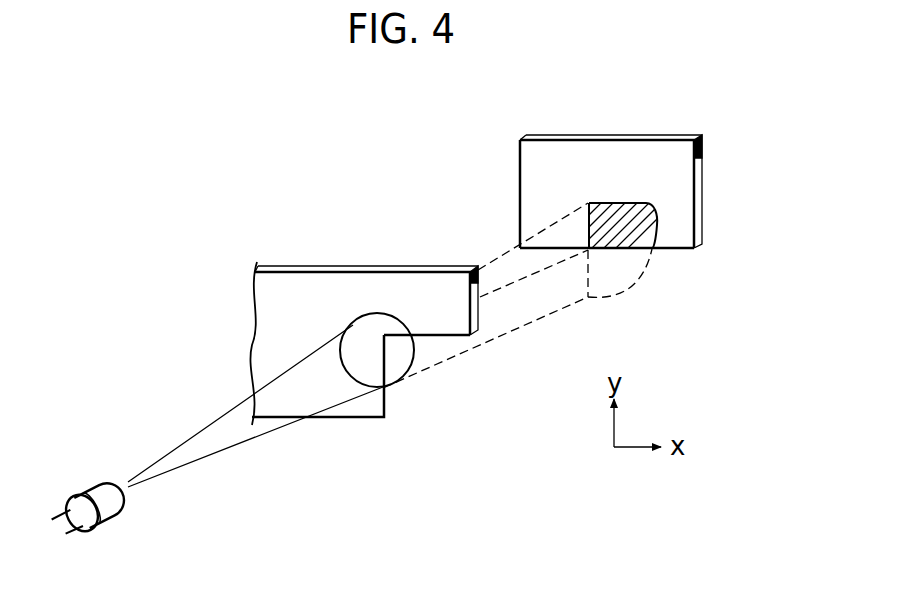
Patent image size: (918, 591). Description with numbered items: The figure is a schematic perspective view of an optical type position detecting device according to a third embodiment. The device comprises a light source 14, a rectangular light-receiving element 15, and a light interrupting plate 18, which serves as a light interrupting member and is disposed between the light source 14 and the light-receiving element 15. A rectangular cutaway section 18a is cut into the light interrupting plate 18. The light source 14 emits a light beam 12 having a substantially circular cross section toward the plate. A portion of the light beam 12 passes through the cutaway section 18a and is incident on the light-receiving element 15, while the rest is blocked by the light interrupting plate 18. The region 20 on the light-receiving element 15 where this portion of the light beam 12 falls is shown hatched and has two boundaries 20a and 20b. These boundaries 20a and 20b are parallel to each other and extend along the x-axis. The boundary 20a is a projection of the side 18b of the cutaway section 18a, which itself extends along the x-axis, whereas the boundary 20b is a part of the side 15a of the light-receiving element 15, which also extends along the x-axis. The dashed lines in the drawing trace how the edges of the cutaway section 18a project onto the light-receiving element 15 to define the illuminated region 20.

The light beam 12 is at (187, 438).
The light source 14 is at (98, 488).
The light-receiving element 15 is at (638, 214).
The side of the light receiving element 15a is at (677, 249).
The light interrupting plate 18 is at (359, 332).
The cutaway section 18a is at (385, 397).
The side of the cutaway section 18b is at (436, 336).
The region 20 is at (641, 210).
The boundary 20a is at (607, 203).
The boundary 20b is at (612, 250).